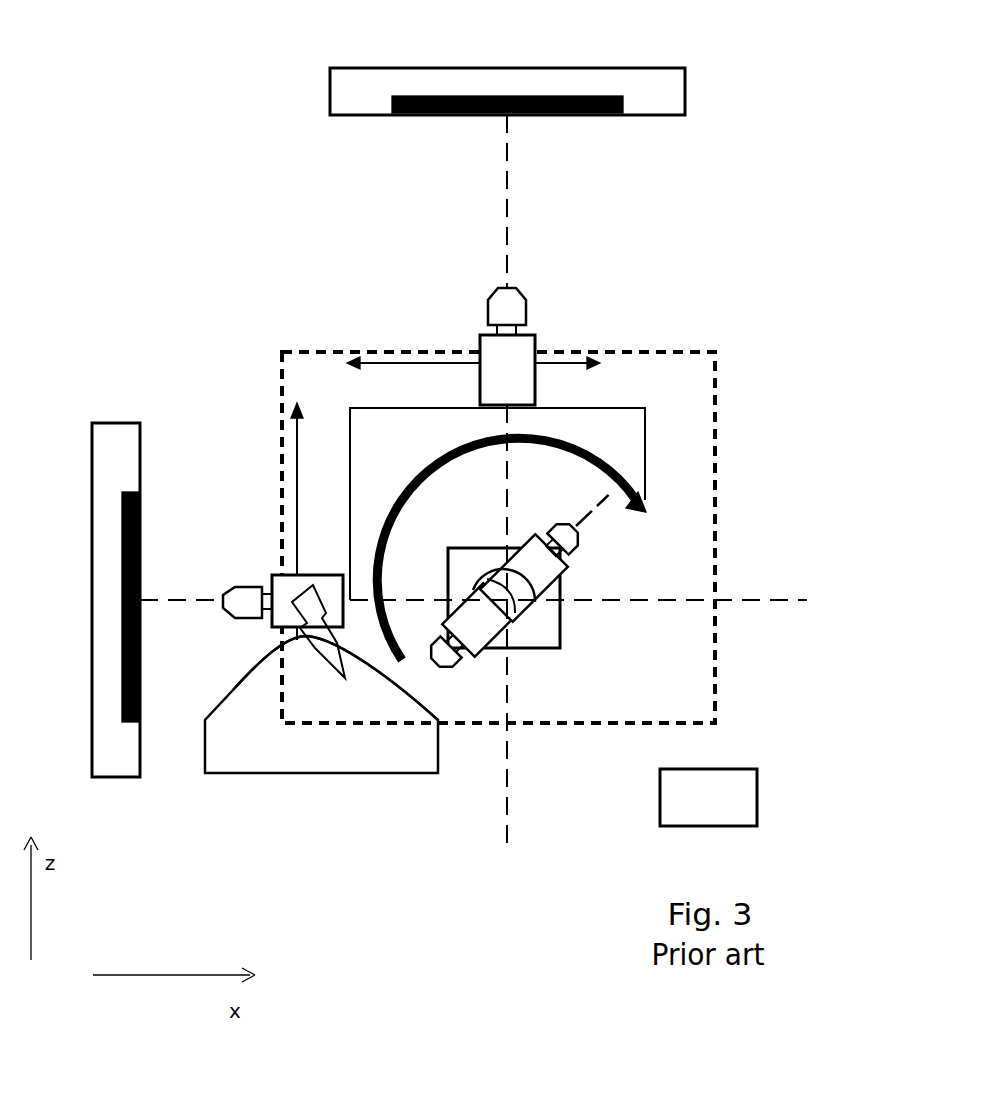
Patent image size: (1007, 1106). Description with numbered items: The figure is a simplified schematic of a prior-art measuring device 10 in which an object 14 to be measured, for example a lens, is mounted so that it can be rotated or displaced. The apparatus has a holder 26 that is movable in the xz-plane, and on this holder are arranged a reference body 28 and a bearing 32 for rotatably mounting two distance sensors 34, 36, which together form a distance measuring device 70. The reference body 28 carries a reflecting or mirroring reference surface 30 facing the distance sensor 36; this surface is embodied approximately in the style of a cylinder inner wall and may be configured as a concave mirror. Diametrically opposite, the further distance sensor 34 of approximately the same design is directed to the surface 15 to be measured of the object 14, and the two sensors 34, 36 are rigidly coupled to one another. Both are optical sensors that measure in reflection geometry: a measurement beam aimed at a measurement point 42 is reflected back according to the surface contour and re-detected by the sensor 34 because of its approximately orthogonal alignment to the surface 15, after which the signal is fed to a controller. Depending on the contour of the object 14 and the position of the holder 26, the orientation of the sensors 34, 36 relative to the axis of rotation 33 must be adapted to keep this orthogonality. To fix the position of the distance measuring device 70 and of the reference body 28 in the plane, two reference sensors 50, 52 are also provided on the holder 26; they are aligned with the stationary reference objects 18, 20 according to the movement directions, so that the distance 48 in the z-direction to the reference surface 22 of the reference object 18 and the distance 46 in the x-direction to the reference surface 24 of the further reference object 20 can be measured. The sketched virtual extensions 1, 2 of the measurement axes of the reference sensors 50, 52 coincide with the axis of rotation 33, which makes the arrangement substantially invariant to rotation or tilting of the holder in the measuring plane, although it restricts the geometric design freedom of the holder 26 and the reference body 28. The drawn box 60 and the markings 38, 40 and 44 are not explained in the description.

The virtual extension of measurement axis 1 is at (509, 802).
The virtual extension of measurement axis 2 is at (768, 600).
The measuring device 10 is at (211, 112).
The object 14 is at (335, 763).
The surface 15 is at (218, 705).
The reference object 18 is at (685, 93).
The further reference object 20 is at (120, 430).
The reference surface 22 is at (615, 115).
The reference surface 24 is at (140, 493).
The holder 26 is at (693, 370).
The reference body 28 is at (628, 415).
The reference surface 30 is at (437, 455).
The bearing 32 is at (557, 637).
The axis of rotation 33 is at (480, 578).
The distance sensor 34 is at (441, 620).
The distance sensor 36 is at (538, 560).
The first sensor 38 is at (425, 676).
The second sensor 40 is at (593, 512).
The measurement point 42 is at (413, 684).
The second end position 44 is at (620, 495).
The distance 46 is at (187, 600).
The distance 48 is at (508, 228).
The reference sensor 50 is at (526, 317).
The reference sensor 52 is at (243, 585).
The control unit 60 is at (750, 796).
The distance measuring device 70 is at (750, 473).